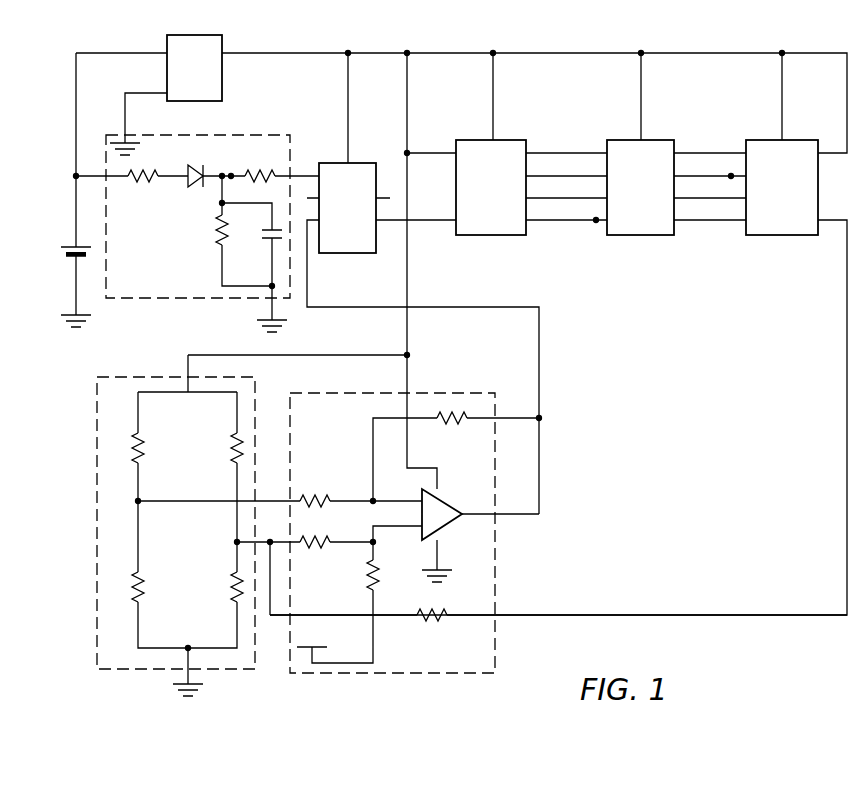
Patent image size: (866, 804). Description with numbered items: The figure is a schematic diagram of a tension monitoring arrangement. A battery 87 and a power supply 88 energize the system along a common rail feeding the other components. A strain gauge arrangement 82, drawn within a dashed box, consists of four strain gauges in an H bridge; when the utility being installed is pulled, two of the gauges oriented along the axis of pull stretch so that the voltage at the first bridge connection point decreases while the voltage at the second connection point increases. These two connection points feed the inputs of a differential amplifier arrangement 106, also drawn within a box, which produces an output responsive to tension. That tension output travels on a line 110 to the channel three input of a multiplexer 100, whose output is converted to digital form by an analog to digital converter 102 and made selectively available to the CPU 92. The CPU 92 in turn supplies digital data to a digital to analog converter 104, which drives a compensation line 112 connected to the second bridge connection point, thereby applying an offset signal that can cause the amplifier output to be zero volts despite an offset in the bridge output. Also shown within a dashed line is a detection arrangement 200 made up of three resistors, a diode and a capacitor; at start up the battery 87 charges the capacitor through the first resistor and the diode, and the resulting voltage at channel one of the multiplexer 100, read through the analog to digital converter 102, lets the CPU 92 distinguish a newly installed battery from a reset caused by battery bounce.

The power supply 88 is at (224, 50).
The battery 87 is at (70, 246).
The detection arrangement 200 is at (195, 300).
The multiplexer 100 is at (355, 163).
The analog to digital converter 102 is at (500, 140).
The CPU 92 is at (650, 140).
The digital to analog converter 104 is at (790, 140).
The line 110 is at (539, 365).
The compensation line 112 is at (847, 373).
The strain gauge arrangement 82 is at (97, 490).
The differential amplifier arrangement 106 is at (495, 548).